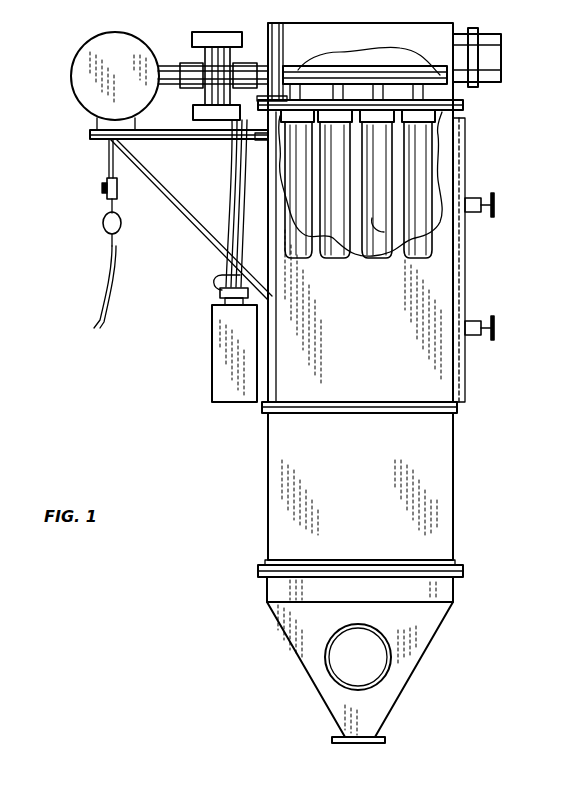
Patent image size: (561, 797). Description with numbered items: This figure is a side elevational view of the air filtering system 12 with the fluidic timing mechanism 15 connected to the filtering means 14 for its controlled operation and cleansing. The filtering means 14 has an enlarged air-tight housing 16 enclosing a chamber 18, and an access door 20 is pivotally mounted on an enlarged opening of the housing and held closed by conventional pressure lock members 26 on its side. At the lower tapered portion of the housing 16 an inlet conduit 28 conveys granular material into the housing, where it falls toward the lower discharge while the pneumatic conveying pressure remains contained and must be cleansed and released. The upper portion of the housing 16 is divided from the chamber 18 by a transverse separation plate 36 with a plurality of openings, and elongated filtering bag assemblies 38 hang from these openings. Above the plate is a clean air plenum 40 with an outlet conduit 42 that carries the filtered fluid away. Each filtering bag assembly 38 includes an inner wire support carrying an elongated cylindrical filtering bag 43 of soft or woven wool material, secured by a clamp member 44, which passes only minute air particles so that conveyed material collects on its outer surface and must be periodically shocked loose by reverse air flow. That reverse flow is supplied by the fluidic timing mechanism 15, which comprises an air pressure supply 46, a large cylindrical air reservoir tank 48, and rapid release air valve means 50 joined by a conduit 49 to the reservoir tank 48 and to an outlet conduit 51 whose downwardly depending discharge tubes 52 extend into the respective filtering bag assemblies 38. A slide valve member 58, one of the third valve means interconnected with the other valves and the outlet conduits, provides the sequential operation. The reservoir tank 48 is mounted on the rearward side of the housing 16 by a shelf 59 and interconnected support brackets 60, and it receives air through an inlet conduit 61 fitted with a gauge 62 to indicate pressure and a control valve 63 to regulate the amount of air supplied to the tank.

The air filtering system 12 is at (493, 100).
The filtering means 14 is at (470, 304).
The fluidic timing mechanism 15 is at (70, 115).
The air-tight housing 16 is at (268, 435).
The chamber 18 is at (395, 190).
The access door 20 is at (457, 278).
The pressure lock members 26 is at (477, 335).
The inlet conduit 28 is at (376, 686).
The transverse separation plate 36 is at (345, 60).
The filtering bag assemblies 38 is at (303, 237).
The clean air plenum 40 is at (390, 56).
The outlet conduit 42 is at (492, 56).
The filtering bag 43 is at (408, 220).
The clamp member 44 is at (410, 130).
The air pressure supply 46 is at (120, 260).
The air reservoir tank 48 is at (115, 48).
The conduit 49 is at (176, 68).
The rapid release air valve means 50 is at (225, 60).
The outlet conduit 51 is at (257, 66).
The discharge tubes 52 is at (303, 84).
The slide valve member 58 is at (220, 307).
The shelf 59 is at (188, 139).
The support brackets 60 is at (207, 232).
The inlet conduit 61 is at (108, 160).
The gauge 62 is at (110, 238).
The control valve 63 is at (116, 195).